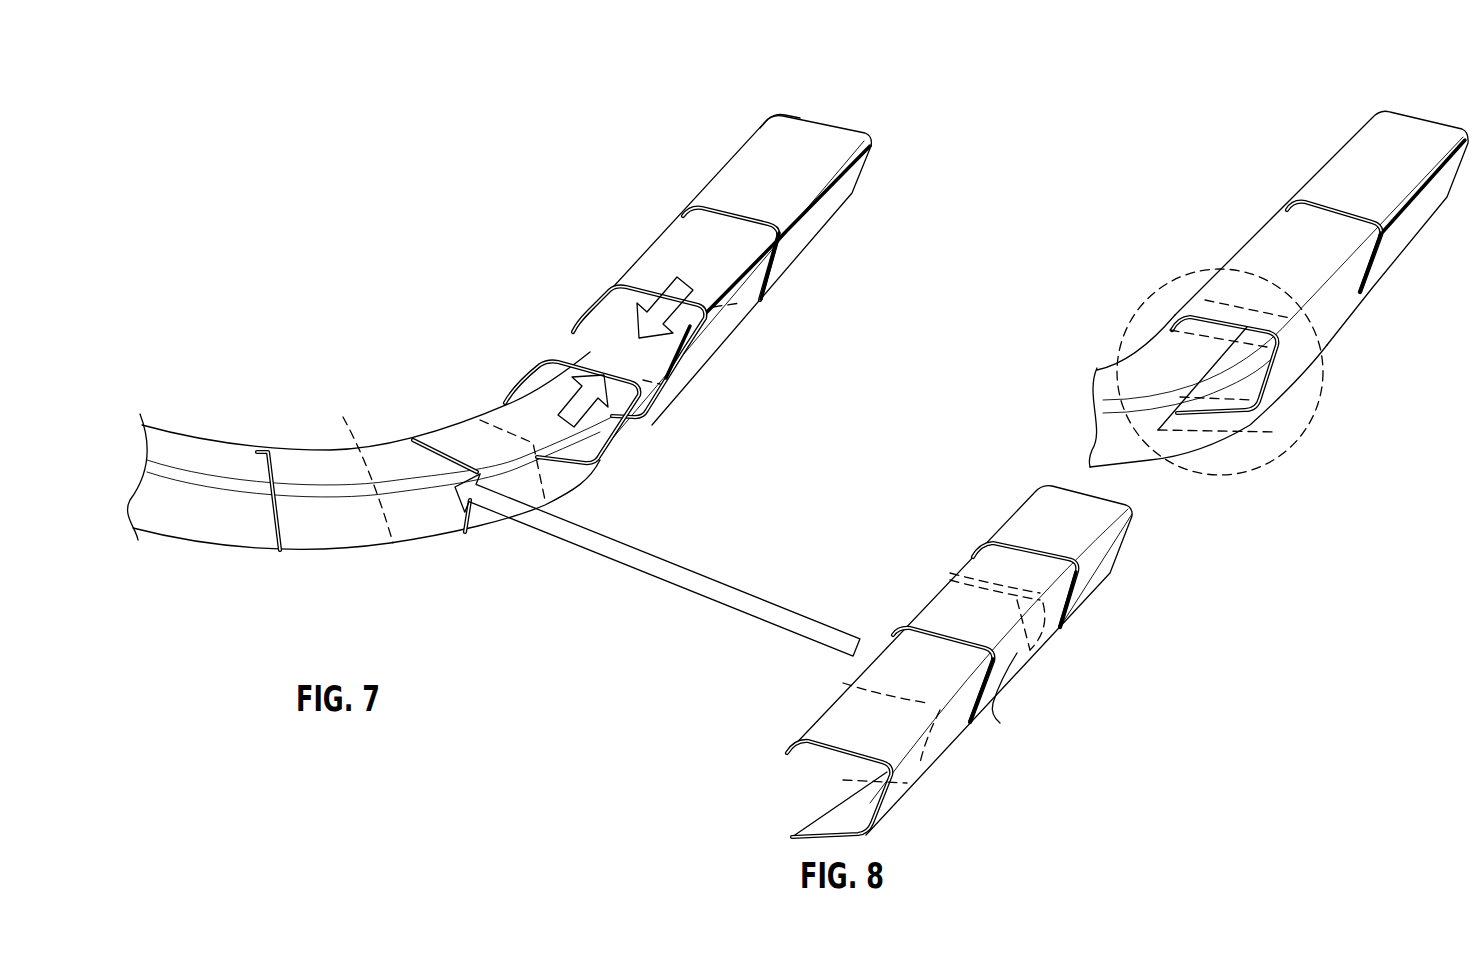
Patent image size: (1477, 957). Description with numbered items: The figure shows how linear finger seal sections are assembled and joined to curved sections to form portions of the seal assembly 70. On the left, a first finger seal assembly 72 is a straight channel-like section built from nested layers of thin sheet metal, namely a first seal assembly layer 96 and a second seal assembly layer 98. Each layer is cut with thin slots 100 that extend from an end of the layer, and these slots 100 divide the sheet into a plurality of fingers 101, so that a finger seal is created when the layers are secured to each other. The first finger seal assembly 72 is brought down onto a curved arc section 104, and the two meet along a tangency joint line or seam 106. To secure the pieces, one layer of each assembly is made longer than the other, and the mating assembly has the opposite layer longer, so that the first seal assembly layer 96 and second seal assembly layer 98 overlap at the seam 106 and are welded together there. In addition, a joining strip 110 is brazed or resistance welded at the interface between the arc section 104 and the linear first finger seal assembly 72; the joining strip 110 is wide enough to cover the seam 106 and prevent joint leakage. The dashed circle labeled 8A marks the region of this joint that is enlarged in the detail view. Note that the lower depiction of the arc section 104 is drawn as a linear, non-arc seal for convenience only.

In FIG. 8, the seal assembly 70 is at (1130, 613).
In FIG. 7, the first finger seal assembly 72 is at (738, 176).
In FIG. 8, the first finger seal assembly 72 is at (1270, 243).
In FIG. 7, the first seal assembly layer 96 is at (778, 112).
In FIG. 8, the first seal assembly layer 96 is at (1100, 517).
In FIG. 8, the second seal assembly layer 98 is at (885, 805).
In FIG. 7, the slots 100 is at (773, 262).
In FIG. 8, the slots 100 is at (1105, 580).
In FIG. 7, the fingers 101 is at (828, 133).
In FIG. 8, the fingers 101 is at (1020, 513).
In FIG. 7, the arc section 104 is at (372, 527).
In FIG. 8, the arc section 104 is at (1130, 383).
In FIG. 8, the tangency joint line or seam 106 is at (1255, 415).
In FIG. 8, the joining strips 110 is at (1272, 365).
In FIG. 8, the detail view circle 8A is at (1322, 355).